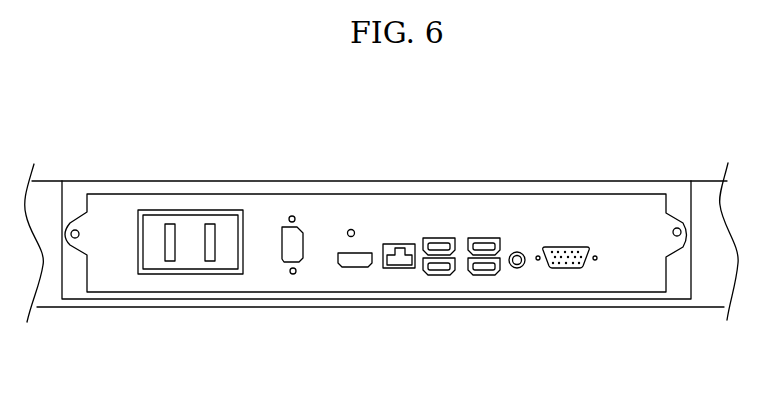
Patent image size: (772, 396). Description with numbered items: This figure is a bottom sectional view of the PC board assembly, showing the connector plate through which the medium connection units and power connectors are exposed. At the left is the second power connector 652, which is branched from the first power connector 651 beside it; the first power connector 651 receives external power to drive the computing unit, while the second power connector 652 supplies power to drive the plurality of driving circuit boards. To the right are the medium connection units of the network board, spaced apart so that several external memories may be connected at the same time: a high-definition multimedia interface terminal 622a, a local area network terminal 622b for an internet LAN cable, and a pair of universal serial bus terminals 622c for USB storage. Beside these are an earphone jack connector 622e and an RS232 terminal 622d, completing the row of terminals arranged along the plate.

The second power connector 652 is at (187, 260).
The first power connector 651 is at (293, 274).
The high-definition multimedia interface (HDMI) terminal 622a is at (352, 266).
The local area network (LAN) terminal 622b is at (401, 267).
The universal serial bus (USB) terminal 622c is at (445, 275).
The earphone jack connector 622e is at (521, 268).
The RS232 terminal 622d is at (577, 263).